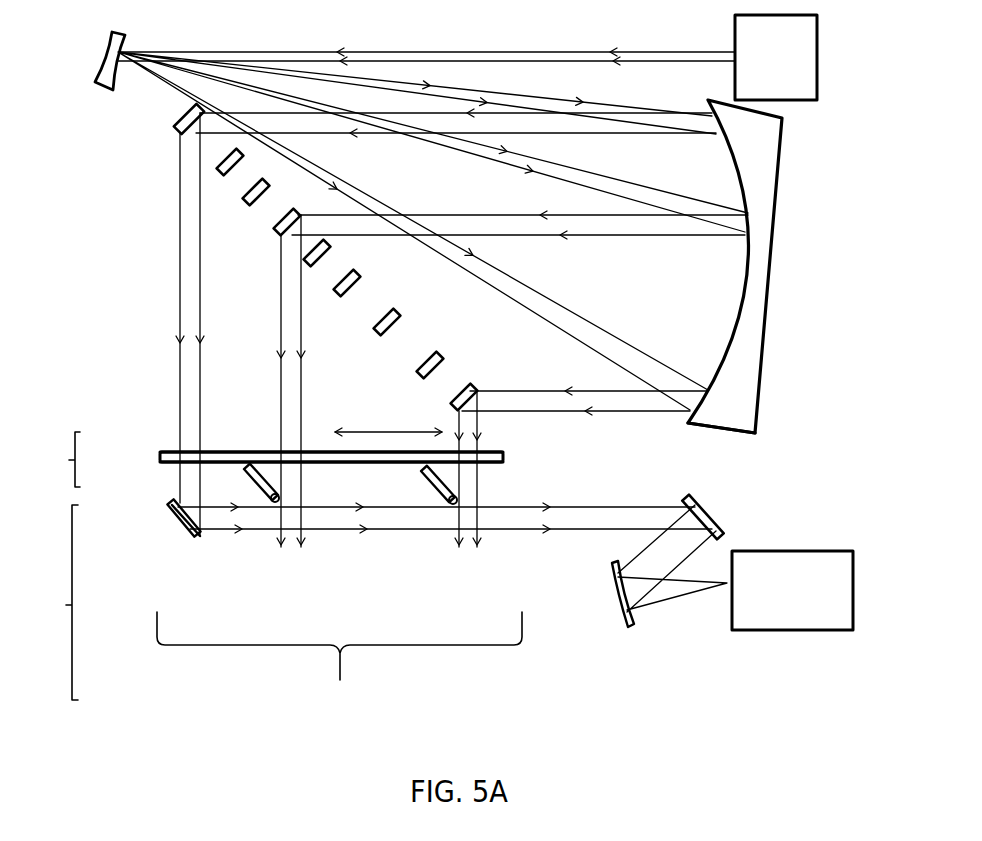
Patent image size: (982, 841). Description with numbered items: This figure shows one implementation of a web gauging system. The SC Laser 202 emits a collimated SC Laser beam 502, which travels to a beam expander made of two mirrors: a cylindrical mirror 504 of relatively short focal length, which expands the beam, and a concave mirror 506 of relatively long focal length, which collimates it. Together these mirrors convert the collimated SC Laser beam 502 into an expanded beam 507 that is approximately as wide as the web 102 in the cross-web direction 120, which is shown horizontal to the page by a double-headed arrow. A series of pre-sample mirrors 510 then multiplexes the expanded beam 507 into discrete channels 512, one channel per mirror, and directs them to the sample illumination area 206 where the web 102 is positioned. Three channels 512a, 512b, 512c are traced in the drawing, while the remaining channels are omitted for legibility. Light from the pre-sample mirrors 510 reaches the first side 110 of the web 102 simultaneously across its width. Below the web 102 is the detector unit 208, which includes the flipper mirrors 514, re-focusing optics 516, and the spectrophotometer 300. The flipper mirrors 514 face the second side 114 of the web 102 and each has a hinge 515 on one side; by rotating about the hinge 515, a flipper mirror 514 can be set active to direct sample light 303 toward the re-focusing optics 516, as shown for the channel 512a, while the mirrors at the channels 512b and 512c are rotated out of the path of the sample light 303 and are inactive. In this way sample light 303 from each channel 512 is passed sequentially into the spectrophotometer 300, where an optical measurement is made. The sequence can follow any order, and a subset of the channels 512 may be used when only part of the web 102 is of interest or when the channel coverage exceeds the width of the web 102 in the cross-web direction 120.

The SC Laser 202 is at (818, 48).
The collimated SC Laser beam 502 is at (587, 55).
The cylindrical mirror 504 is at (97, 78).
The concave mirror 506 is at (773, 212).
The expanded beam 507 is at (652, 420).
The pre-sample mirrors 510 is at (172, 123).
The channels 512 is at (339, 676).
The channel 512a is at (193, 568).
The channel 512b is at (298, 568).
The channel 512c is at (473, 568).
The web 102 is at (503, 457).
The first side 110 is at (171, 438).
The second side 114 is at (171, 470).
The cross-web direction 120 is at (388, 417).
The sample illumination area 206 is at (43, 459).
The detector unit 208 is at (42, 602).
The hinge 515 is at (172, 510).
The flipper mirrors 514 is at (182, 531).
The sample light 303 is at (432, 535).
The re-focusing optics 516 is at (710, 505).
The spectrophotometer 300 is at (785, 550).